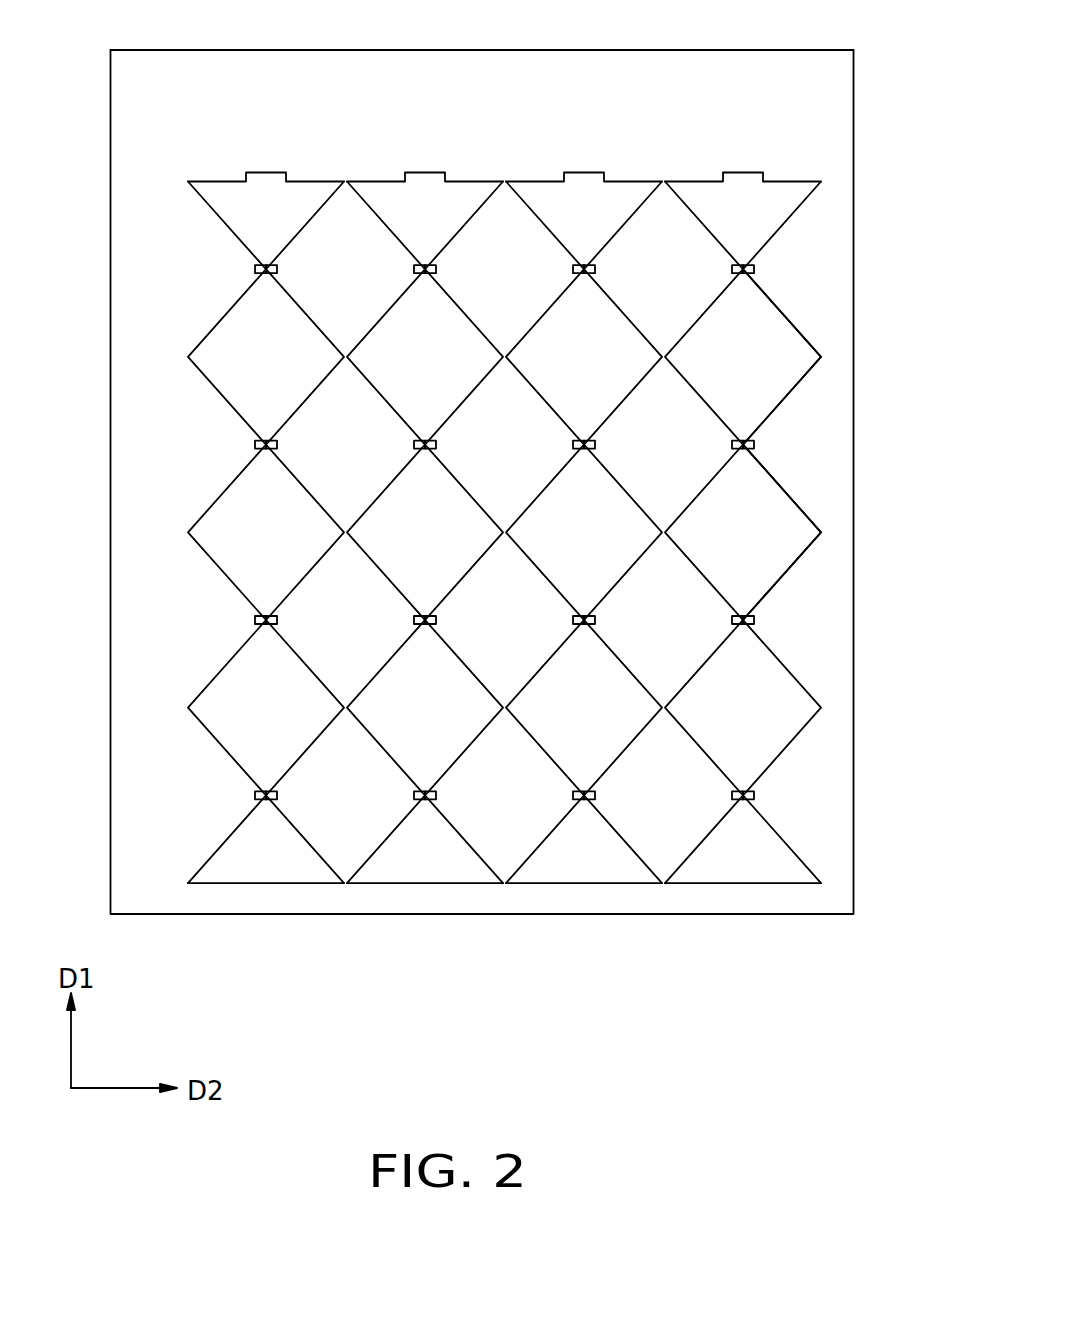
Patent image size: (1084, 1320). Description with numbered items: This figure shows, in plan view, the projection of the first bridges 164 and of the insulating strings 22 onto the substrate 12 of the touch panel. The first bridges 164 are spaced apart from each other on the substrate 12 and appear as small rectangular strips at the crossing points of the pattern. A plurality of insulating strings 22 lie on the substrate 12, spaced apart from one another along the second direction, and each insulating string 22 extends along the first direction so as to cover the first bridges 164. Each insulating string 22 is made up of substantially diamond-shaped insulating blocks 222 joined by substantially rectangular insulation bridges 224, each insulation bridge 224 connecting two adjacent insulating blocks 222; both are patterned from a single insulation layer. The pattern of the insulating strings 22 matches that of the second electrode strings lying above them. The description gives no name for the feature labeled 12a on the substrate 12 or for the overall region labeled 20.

The substrate 12 is at (827, 798).
The surface of substrate 12a is at (824, 134).
The touch electrode layer 20 is at (562, 588).
The insulating string 22 is at (594, 861).
The first bridge 164 is at (755, 270).
The insulating block 222 is at (783, 360).
The insulation bridge 224 is at (755, 446).